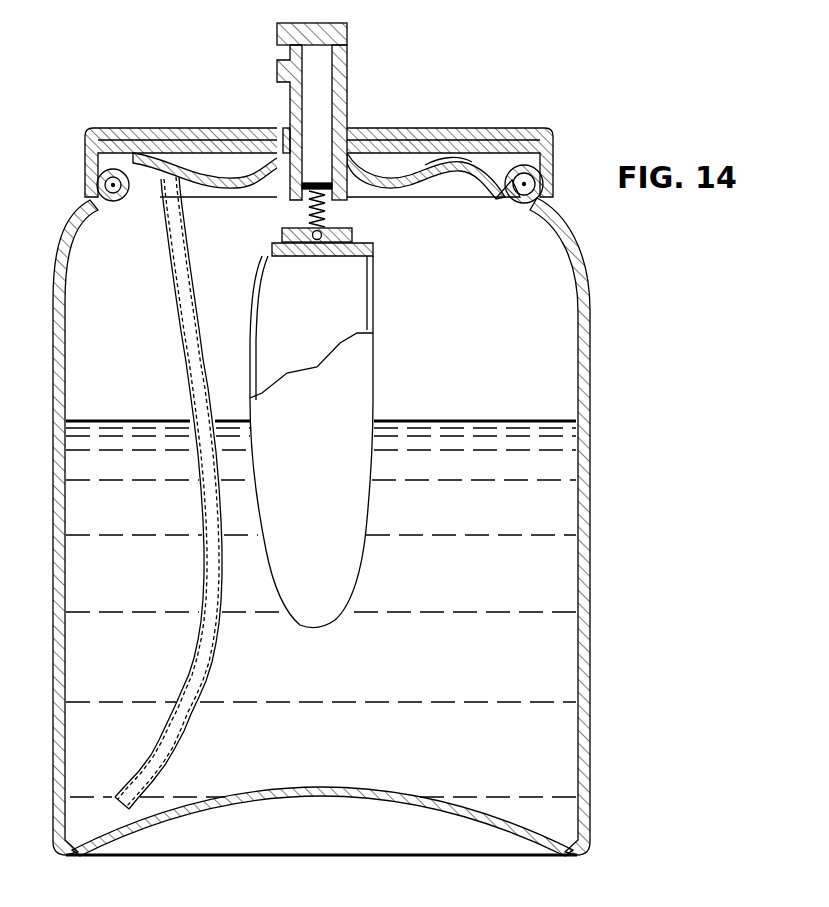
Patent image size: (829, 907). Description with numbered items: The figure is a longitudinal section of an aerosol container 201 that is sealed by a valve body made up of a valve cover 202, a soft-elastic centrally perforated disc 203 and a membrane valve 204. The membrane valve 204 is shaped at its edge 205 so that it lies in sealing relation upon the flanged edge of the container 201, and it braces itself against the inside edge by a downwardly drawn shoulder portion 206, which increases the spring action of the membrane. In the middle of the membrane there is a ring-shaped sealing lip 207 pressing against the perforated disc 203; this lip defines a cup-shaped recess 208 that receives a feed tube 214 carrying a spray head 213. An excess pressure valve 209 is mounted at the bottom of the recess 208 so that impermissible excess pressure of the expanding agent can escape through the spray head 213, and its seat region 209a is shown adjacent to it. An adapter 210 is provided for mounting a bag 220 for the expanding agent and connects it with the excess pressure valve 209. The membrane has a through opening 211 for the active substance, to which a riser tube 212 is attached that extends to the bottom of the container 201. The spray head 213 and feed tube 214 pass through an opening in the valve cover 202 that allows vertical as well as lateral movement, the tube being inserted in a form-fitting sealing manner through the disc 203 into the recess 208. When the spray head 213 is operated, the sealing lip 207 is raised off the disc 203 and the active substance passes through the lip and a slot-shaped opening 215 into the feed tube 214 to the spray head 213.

The aerosol container 201 is at (53, 279).
The valve cover 202 is at (445, 128).
The soft-elastic centrally perforated disc 203 is at (493, 128).
The membrane valve 204 is at (462, 170).
The edge 205 is at (537, 153).
The downwardly drawn shoulder portion 206 is at (507, 200).
The ring-shaped sealing lip 207 is at (380, 178).
The cup-shaped recess 208 is at (350, 192).
The excess pressure valve 209 is at (300, 211).
The valve seat 209a is at (287, 237).
The adapter 210 is at (283, 257).
The through opening 211 is at (157, 200).
The riser tube 212 is at (180, 293).
The spray head 213 is at (347, 37).
The feed tube 214 is at (348, 82).
The slot-shaped opening 215 is at (290, 130).
The bag 220 is at (370, 367).